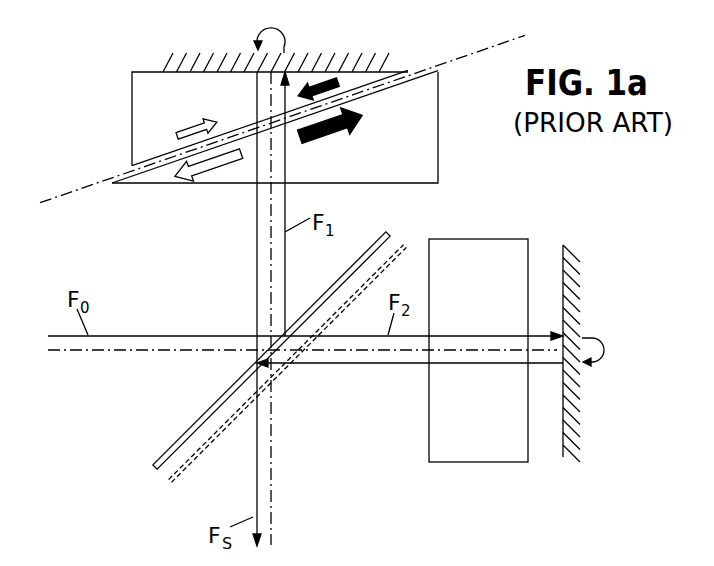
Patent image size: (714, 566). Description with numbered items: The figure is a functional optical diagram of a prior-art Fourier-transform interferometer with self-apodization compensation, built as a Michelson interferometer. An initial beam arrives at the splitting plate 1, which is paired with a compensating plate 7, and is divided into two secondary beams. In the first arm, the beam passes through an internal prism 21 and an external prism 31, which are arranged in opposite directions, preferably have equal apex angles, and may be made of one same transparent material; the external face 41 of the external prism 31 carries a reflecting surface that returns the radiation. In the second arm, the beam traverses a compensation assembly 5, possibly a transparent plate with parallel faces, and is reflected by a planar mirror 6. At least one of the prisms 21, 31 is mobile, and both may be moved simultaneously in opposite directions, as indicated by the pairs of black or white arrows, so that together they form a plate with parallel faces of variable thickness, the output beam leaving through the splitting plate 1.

The splitting plate 1 is at (168, 448).
The internal prism 21 is at (438, 157).
The external prism 31 is at (132, 92).
The external face of the prism 41 is at (188, 63).
The compensation assembly 5 is at (508, 239).
The planar mirror 6 is at (573, 280).
The compensating plate 7 is at (185, 472).